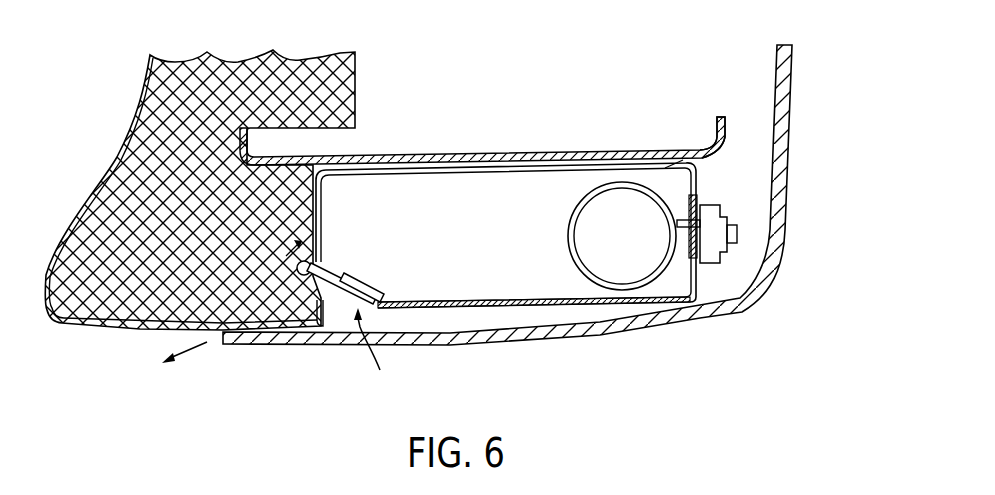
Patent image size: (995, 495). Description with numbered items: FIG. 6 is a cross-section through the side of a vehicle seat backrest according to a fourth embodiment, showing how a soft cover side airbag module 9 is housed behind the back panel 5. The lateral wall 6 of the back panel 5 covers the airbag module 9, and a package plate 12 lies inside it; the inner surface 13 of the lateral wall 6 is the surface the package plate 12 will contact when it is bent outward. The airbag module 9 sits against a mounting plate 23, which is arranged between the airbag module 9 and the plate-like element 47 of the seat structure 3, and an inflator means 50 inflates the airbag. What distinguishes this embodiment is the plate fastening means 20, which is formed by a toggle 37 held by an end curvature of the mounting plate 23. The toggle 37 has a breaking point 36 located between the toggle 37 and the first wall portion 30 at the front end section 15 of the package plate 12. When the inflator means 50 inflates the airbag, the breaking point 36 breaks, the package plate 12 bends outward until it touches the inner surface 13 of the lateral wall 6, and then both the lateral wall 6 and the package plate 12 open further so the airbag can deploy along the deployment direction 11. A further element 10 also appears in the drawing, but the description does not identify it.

The seat structure 3 is at (533, 130).
The back panel 5 is at (534, 223).
The lateral wall 6 is at (505, 345).
The soft cover side airbag module 9 is at (518, 265).
The lining element 10 is at (224, 333).
The deployment direction 11 is at (207, 343).
The package plate 12 is at (650, 305).
The inner surface 13 is at (432, 330).
The front end section 15 is at (371, 355).
The plate fastening means 20 is at (300, 278).
The mounting plate 23 is at (482, 131).
The first wall portion 30 is at (506, 250).
The breaking point 36 is at (355, 280).
The toggle 37 is at (334, 265).
The plate-like element 47 is at (507, 155).
The inflator means 50 is at (612, 182).